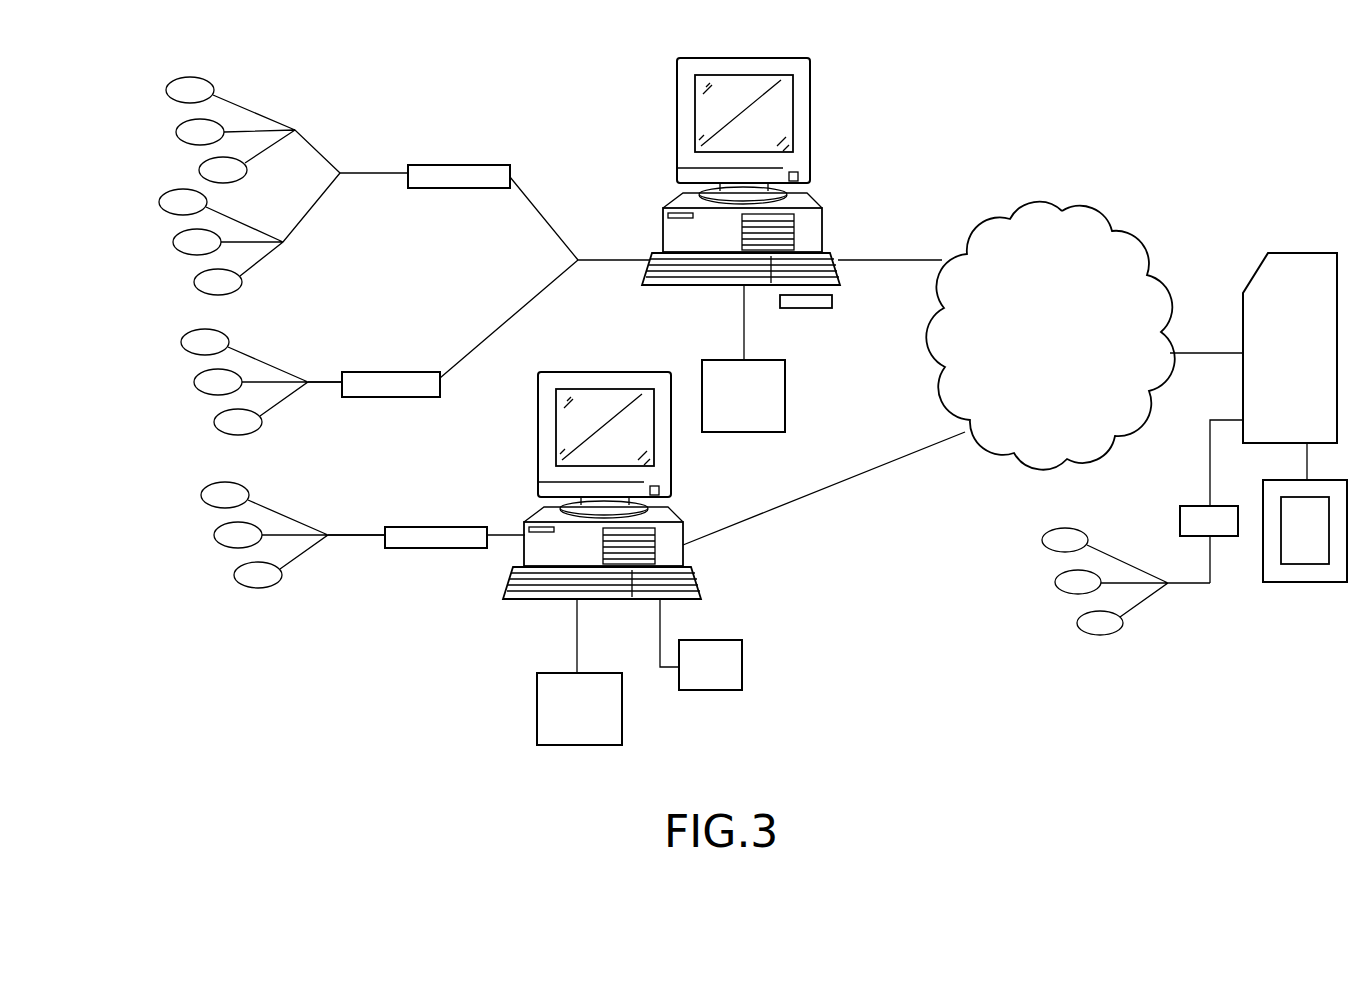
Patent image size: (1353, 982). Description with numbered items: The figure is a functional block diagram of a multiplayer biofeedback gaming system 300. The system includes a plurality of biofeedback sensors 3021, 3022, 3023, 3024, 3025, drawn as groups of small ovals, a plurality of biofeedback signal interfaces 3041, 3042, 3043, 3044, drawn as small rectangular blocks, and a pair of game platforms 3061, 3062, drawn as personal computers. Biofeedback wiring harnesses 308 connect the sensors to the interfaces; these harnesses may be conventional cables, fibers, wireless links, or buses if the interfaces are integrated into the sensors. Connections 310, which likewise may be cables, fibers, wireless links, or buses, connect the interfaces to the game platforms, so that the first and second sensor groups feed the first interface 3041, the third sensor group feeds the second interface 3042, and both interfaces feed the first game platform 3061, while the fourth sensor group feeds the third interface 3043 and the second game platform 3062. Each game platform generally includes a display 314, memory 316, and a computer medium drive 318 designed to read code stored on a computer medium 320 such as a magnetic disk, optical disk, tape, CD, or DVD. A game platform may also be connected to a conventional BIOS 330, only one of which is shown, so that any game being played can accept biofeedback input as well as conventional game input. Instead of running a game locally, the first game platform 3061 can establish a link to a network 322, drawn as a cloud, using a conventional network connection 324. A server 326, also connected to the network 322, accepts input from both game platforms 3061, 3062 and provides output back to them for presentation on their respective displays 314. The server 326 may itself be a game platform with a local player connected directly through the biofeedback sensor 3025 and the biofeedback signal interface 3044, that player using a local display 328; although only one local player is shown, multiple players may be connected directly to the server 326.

The multiplayer biofeedback gaming system 300 is at (703, 406).
The biofeedback sensor 3021 is at (150, 131).
The biofeedback sensor 3022 is at (148, 241).
The biofeedback sensor 3023 is at (176, 385).
The biofeedback sensor 3024 is at (192, 556).
The biofeedback sensor 3025 is at (1058, 625).
The biofeedback signal interface 3041 is at (472, 165).
The biofeedback signal interface 3042 is at (410, 372).
The biofeedback signal interface 3043 is at (440, 527).
The biofeedback signal interface 3044 is at (1222, 536).
The game platform 3061 is at (747, 171).
The game platform 3062 is at (520, 600).
The biofeedback wiring harness 308 is at (370, 165).
The connection 310 is at (595, 260).
The display 314 is at (812, 110).
The memory 316 is at (785, 397).
The computer medium drive 318 is at (822, 225).
The computer medium 320 is at (832, 302).
The network 322 is at (1114, 228).
The network connection 324 is at (921, 260).
The server 326 is at (1305, 253).
The local display 328 is at (1313, 582).
The BIOS 330 is at (742, 650).